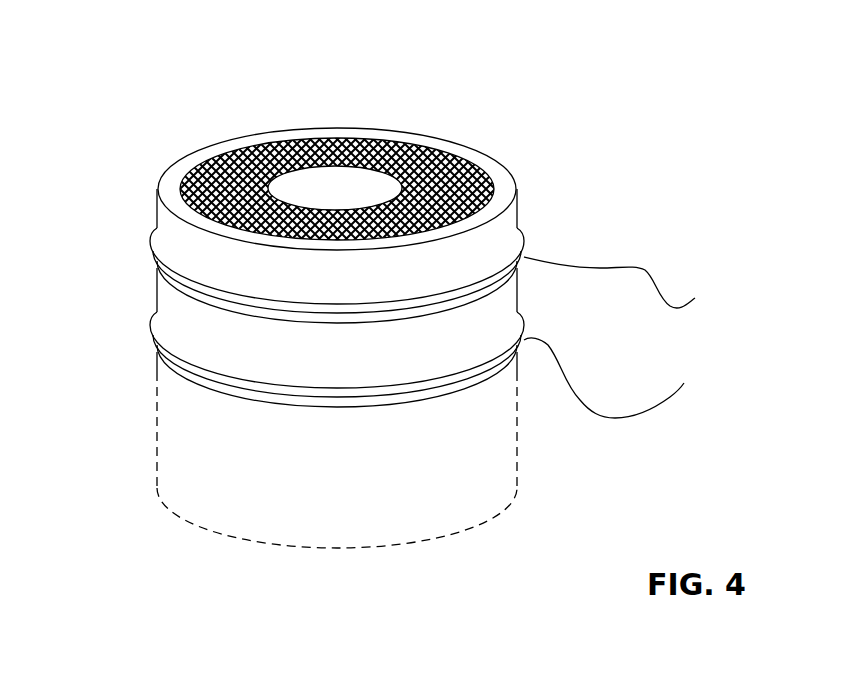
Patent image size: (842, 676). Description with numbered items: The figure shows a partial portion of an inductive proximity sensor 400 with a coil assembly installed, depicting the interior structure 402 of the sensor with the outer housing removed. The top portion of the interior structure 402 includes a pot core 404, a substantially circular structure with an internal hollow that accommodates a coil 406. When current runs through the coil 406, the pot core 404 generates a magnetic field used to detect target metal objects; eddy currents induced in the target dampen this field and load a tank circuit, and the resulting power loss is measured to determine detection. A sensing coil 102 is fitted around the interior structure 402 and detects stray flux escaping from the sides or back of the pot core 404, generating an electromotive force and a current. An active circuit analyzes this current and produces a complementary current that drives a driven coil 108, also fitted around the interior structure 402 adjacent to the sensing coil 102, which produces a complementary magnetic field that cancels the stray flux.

The inductive proximity sensor 400 is at (399, 281).
The interior structure 402 is at (518, 216).
The pot core 404 is at (401, 122).
The coil 406 is at (232, 165).
The sensing coil 102 is at (156, 252).
The driven coil 108 is at (156, 338).